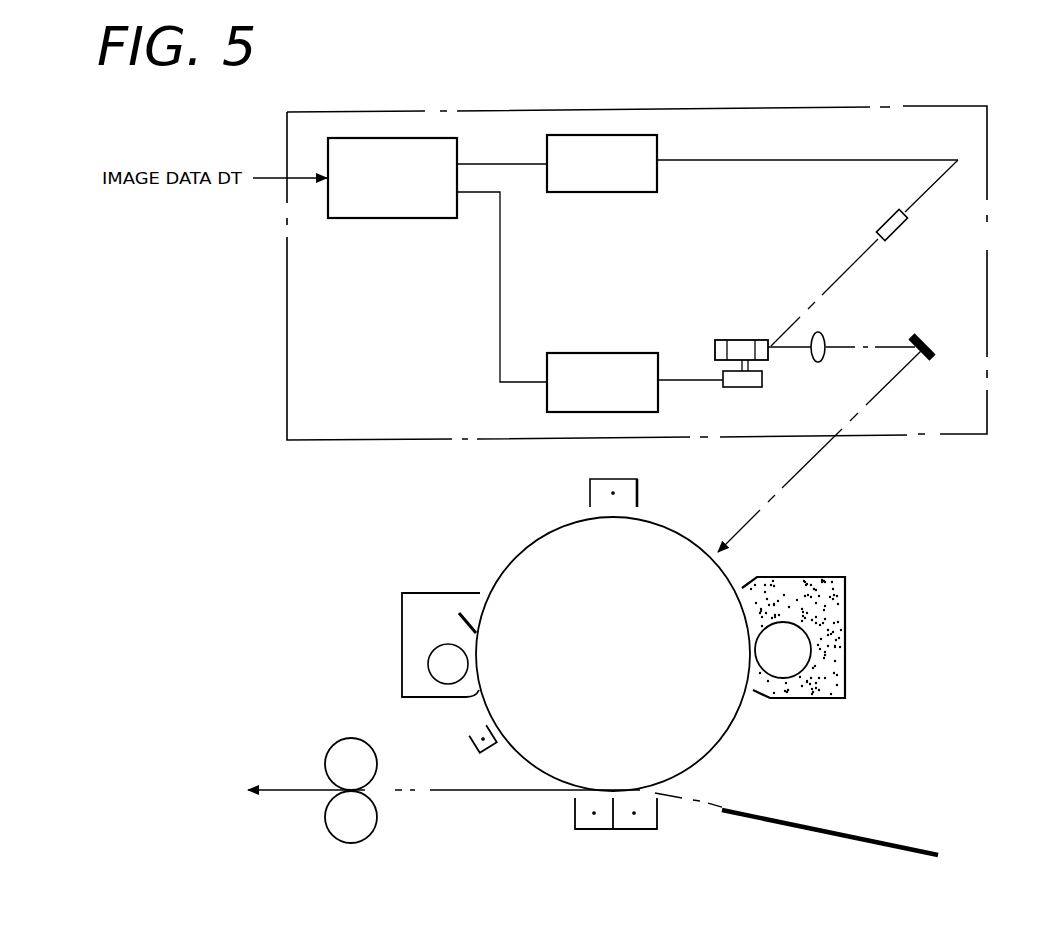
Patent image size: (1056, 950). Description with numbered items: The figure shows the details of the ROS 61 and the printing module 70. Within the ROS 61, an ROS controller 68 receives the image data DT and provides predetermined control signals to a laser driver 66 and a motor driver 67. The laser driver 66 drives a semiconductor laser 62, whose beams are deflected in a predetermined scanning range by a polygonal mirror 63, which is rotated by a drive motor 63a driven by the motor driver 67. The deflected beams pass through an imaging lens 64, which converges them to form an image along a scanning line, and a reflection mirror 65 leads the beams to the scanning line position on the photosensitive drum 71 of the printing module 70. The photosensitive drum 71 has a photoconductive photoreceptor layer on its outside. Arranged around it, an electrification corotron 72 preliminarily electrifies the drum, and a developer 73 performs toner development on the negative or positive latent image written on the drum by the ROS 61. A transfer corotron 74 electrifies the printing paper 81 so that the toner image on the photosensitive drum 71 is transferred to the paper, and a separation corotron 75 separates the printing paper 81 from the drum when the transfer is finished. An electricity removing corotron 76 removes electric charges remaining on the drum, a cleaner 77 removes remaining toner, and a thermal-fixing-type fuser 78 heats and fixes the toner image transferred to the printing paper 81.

The ROS 61 is at (805, 105).
The semiconductor laser 62 is at (878, 225).
The polygonal mirror 63 is at (741, 340).
The drive motor 63a is at (745, 388).
The imaging lens 64 is at (828, 345).
The reflection mirror 65 is at (928, 340).
The laser driver 66 is at (600, 193).
The motor driver 67 is at (605, 352).
The ROS controller 68 is at (385, 219).
The printing module 70 is at (838, 545).
The photosensitive drum 71 is at (722, 578).
The electrification corotron 72 is at (637, 493).
The developer 73 is at (846, 622).
The transfer corotron 74 is at (636, 830).
The separation corotron 75 is at (596, 830).
The electricity removing corotron 76 is at (470, 750).
The cleaner 77 is at (402, 627).
The thermal-fixing-type fuser 78 is at (352, 738).
The printing paper 81 is at (872, 838).